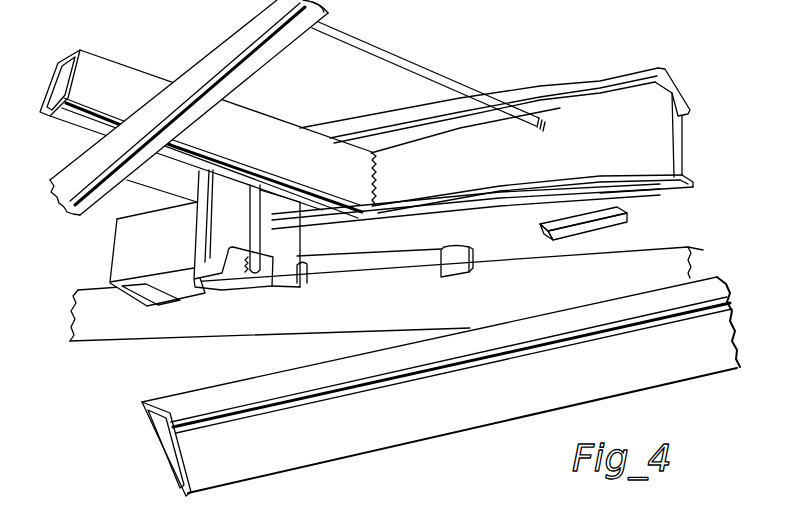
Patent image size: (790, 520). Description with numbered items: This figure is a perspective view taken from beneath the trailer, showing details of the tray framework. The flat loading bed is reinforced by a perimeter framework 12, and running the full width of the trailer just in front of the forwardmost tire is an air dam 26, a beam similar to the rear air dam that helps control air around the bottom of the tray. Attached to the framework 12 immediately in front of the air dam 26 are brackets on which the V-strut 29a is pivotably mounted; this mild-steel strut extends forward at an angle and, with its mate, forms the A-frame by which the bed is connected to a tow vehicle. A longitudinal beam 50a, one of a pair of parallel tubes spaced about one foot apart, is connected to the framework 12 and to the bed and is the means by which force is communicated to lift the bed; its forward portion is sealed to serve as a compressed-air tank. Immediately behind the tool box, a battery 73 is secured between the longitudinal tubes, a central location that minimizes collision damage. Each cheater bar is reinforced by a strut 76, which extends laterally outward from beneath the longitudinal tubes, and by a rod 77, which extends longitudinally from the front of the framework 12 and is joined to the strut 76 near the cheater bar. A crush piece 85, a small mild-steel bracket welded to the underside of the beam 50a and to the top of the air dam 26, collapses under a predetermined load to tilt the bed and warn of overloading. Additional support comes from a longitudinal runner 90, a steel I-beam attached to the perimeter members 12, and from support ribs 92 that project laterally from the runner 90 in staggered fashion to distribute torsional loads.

The perimeter framework 12 is at (630, 157).
The air dam 26 is at (570, 295).
The V-strut 29a is at (542, 392).
The longitudinal beam 50a is at (282, 161).
The battery 73 is at (164, 255).
The strut 76 is at (213, 47).
The rod 77 is at (437, 74).
The crush piece 85 is at (307, 282).
The longitudinal runner 90 is at (513, 243).
The support rib 92 is at (626, 214).